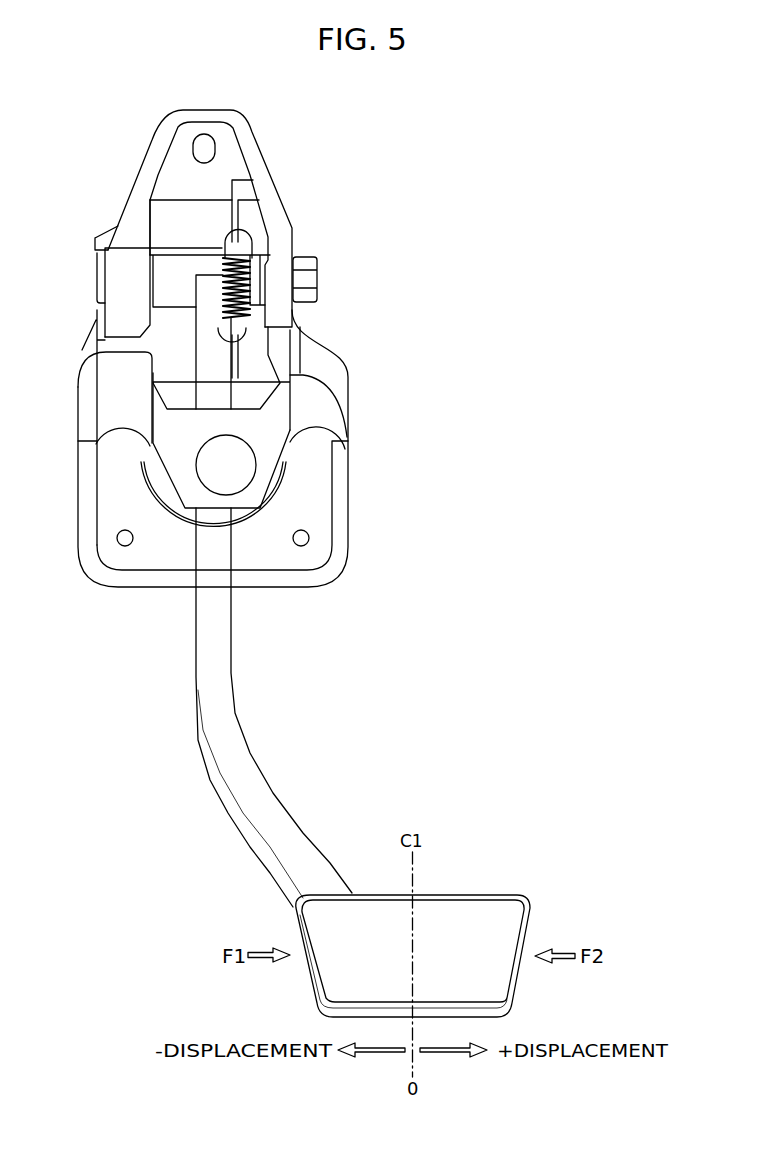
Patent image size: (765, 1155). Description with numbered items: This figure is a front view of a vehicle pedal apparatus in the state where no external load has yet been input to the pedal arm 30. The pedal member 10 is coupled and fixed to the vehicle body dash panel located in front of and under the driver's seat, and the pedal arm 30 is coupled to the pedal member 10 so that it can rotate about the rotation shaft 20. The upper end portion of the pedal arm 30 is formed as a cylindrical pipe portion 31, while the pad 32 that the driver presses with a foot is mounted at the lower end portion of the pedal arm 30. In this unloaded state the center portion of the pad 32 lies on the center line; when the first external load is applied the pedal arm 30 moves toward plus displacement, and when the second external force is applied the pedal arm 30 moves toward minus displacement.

The pedal member 10 is at (327, 415).
The rotation shaft 20 is at (306, 282).
The pedal arm 30 is at (223, 705).
The cylindrical pipe portion 31 is at (168, 215).
The pad 32 is at (485, 920).